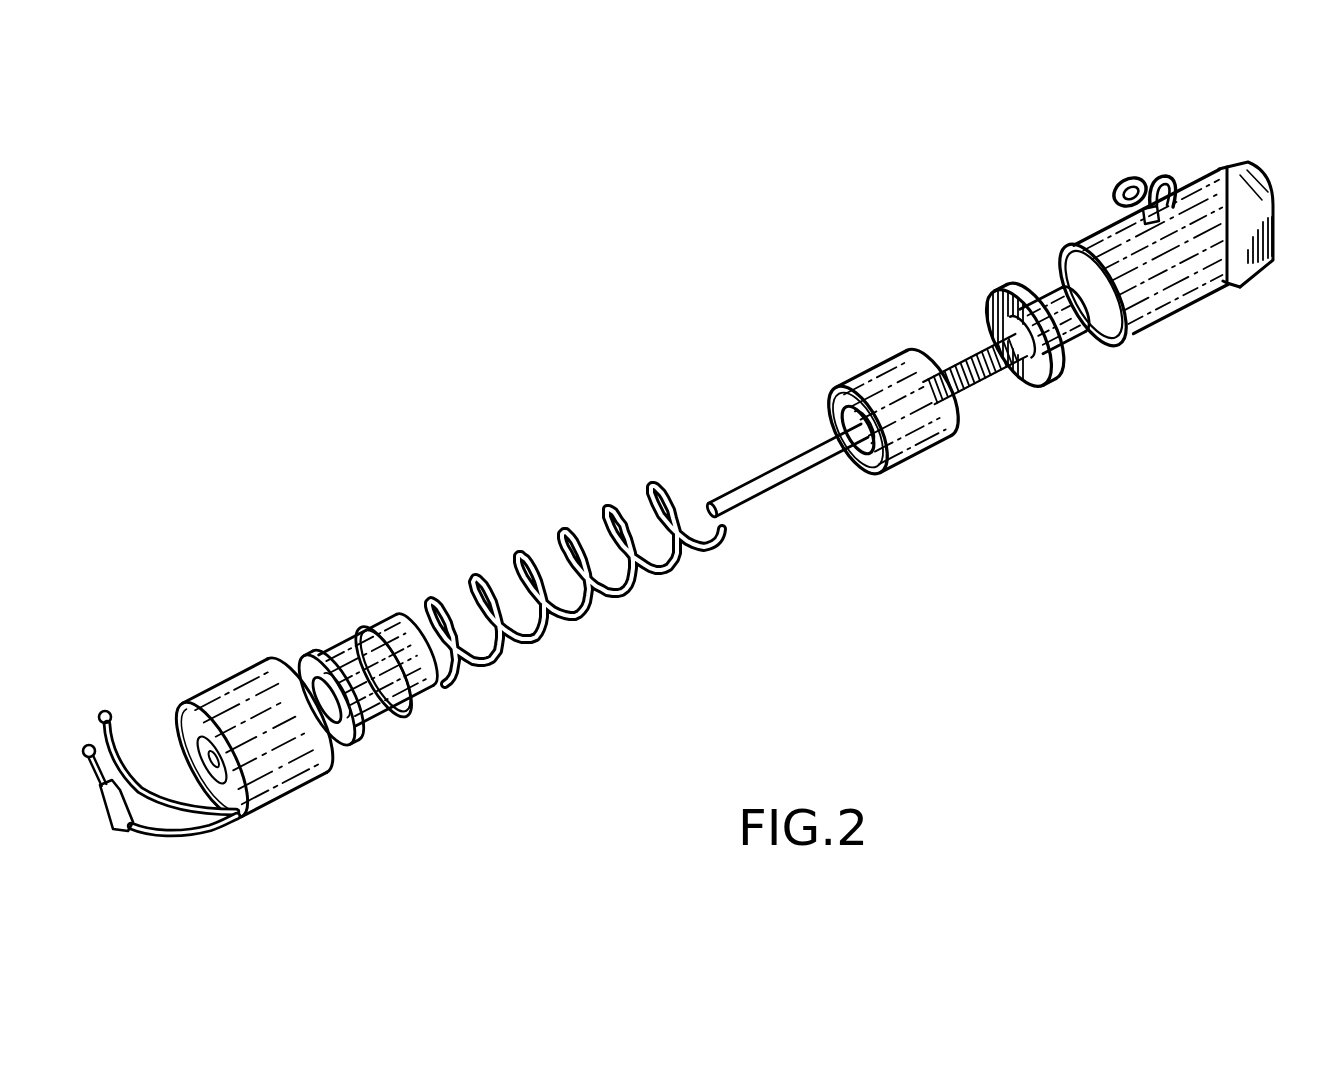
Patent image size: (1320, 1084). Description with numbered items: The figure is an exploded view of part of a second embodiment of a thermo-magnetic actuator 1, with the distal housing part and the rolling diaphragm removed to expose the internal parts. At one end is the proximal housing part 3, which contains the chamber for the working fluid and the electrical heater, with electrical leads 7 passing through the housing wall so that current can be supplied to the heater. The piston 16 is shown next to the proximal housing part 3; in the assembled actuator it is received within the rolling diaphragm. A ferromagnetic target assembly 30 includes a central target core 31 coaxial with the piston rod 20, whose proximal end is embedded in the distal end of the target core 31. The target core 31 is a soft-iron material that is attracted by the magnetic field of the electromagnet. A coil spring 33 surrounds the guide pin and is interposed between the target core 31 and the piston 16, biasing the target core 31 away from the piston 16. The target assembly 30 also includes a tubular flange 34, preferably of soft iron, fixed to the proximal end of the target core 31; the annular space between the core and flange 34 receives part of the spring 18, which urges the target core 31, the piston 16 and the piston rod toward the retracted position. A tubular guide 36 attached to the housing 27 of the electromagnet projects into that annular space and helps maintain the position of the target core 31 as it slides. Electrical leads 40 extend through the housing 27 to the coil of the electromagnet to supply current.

The thermo-magnetic actuator 1 is at (688, 396).
The proximal housing part 3 is at (1170, 290).
The electrical leads 7 is at (1143, 182).
The piston 16 is at (1080, 340).
The spring 18 is at (563, 528).
The piston rod 20 is at (747, 496).
The housing of the electromagnet 27 is at (243, 685).
The ferromagnetic target assembly 30 is at (834, 542).
The target core 31 is at (882, 452).
The coil spring 33 is at (970, 362).
The tubular flange 34 is at (888, 360).
The tubular guide 36 is at (362, 657).
The electrical leads 40 is at (125, 745).